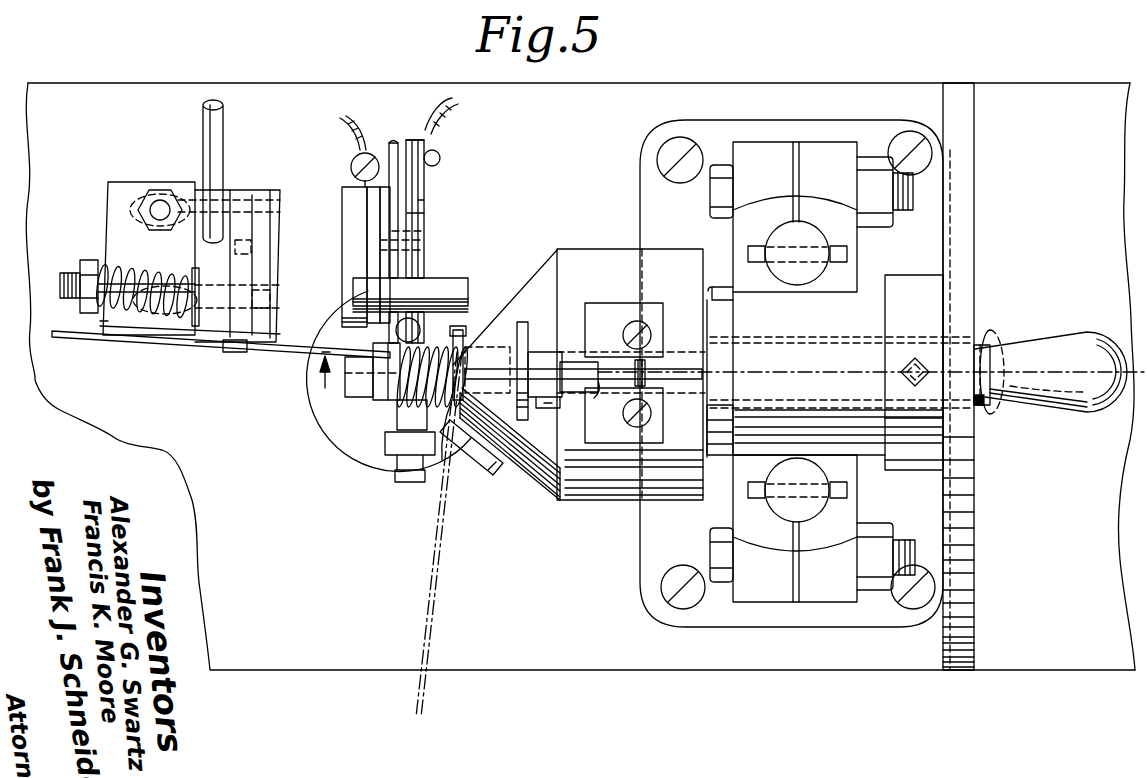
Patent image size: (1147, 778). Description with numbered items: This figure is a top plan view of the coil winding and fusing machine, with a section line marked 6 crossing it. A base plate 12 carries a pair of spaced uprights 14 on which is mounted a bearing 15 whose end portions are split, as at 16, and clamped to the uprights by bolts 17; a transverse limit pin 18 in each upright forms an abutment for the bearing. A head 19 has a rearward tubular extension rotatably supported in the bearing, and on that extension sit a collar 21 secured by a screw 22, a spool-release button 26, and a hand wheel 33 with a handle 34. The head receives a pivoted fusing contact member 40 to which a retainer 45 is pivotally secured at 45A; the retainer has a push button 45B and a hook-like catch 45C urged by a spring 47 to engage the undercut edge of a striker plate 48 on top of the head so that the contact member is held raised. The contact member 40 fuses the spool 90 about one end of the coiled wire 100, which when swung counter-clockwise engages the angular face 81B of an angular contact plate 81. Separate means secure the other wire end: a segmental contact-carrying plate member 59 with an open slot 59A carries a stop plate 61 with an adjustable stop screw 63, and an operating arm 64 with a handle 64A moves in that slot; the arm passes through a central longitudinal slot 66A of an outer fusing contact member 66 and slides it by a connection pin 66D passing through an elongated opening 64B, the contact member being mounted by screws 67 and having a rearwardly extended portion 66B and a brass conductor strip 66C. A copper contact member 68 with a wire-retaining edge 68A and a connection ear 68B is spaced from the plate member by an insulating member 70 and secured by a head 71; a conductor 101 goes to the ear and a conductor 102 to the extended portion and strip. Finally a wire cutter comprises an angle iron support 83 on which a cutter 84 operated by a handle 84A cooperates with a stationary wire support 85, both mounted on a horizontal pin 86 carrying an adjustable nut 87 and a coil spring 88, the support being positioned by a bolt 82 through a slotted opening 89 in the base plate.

The base plate 12 is at (343, 90).
The uprights 14 is at (806, 235).
The bearing 15 is at (833, 307).
The split 16 is at (797, 142).
The bolts 17 is at (722, 166).
The transverse limit pin 18 is at (848, 255).
The head 19 is at (558, 513).
The collar 21 is at (928, 276).
The screw 22 is at (925, 360).
The spool-release button 26 is at (1000, 335).
The hand wheel 33 is at (966, 232).
The handle 34 is at (1099, 317).
The fusing contact member 40 is at (502, 352).
The retainer 45 is at (539, 342).
The pivot 45A is at (487, 477).
The push button 45B is at (529, 325).
The hook-like catch 45C is at (574, 360).
The spring 47 is at (545, 498).
The striker plate 48 is at (589, 304).
The contact-carrying plate member 59 is at (432, 160).
The open slot 59A is at (405, 146).
The stop plate 61 is at (345, 443).
The adjustable stop screw 63 is at (398, 478).
The operating arm 64 is at (393, 143).
The handle 64A is at (442, 292).
The elongated opening 64B is at (413, 248).
The outer fusing contact member 66 is at (396, 184).
The central longitudinal slot 66A is at (408, 213).
The rearwardly extended portion 66B is at (417, 140).
The brass conductor strip 66C is at (420, 200).
The connection pin 66D is at (410, 231).
The screws 67 is at (416, 328).
The electrical contact member 68 is at (375, 238).
The wire-retaining edge 68A is at (322, 352).
The electrical conductor connection ear 68B is at (351, 168).
The insulating member 70 is at (386, 256).
The head 71 is at (346, 217).
The angular contact plate 81 is at (462, 334).
The angular face 81B is at (442, 460).
The bolt 82 is at (163, 200).
The angle iron support 83 is at (115, 184).
The cutter 84 is at (205, 318).
The handle 84A is at (209, 120).
The stationary wire support 85 is at (232, 355).
The horizontal pin 86 is at (68, 273).
The adjustable nut 87 is at (80, 305).
The coil spring 88 is at (118, 267).
The slotted opening 89 is at (127, 204).
The spool 90 is at (390, 398).
The coiled wire 100 is at (115, 338).
The conductor 101 is at (343, 118).
The conductor 102 is at (456, 100).
The section line 6 is at (729, 384).